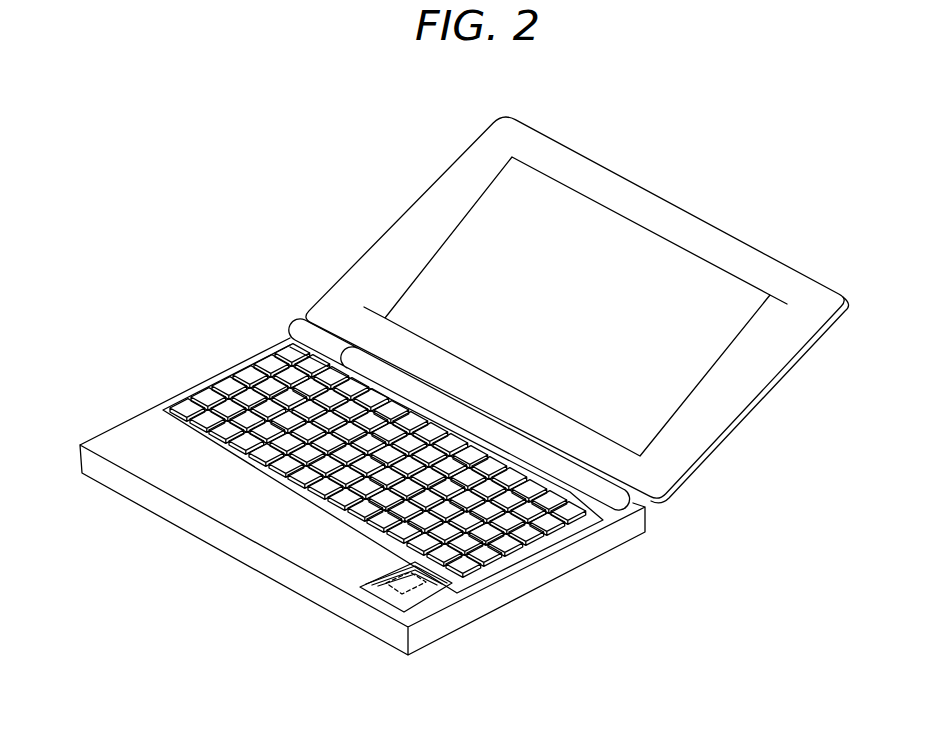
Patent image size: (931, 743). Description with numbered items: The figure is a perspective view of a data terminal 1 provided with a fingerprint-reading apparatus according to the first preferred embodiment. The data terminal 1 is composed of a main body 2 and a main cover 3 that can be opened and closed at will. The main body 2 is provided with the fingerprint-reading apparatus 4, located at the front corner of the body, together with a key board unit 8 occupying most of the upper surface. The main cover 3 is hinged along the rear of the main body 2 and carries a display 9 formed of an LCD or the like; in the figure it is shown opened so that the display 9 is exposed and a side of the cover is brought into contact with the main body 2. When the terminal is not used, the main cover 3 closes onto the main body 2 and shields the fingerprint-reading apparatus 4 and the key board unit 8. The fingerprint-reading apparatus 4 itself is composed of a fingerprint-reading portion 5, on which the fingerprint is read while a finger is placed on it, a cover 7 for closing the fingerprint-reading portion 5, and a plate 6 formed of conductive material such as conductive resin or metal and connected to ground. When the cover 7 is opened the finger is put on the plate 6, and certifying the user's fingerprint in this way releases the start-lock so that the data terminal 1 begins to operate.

The data terminal 1 is at (370, 246).
The main body 2 is at (130, 433).
The main cover 3 is at (670, 218).
The fingerprint-reading apparatus 4 is at (427, 603).
The fingerprint-reading portion 5 is at (392, 578).
The plate 6 is at (372, 598).
The cover 7 is at (456, 592).
The key board unit 8 is at (263, 388).
The display 9 is at (548, 190).